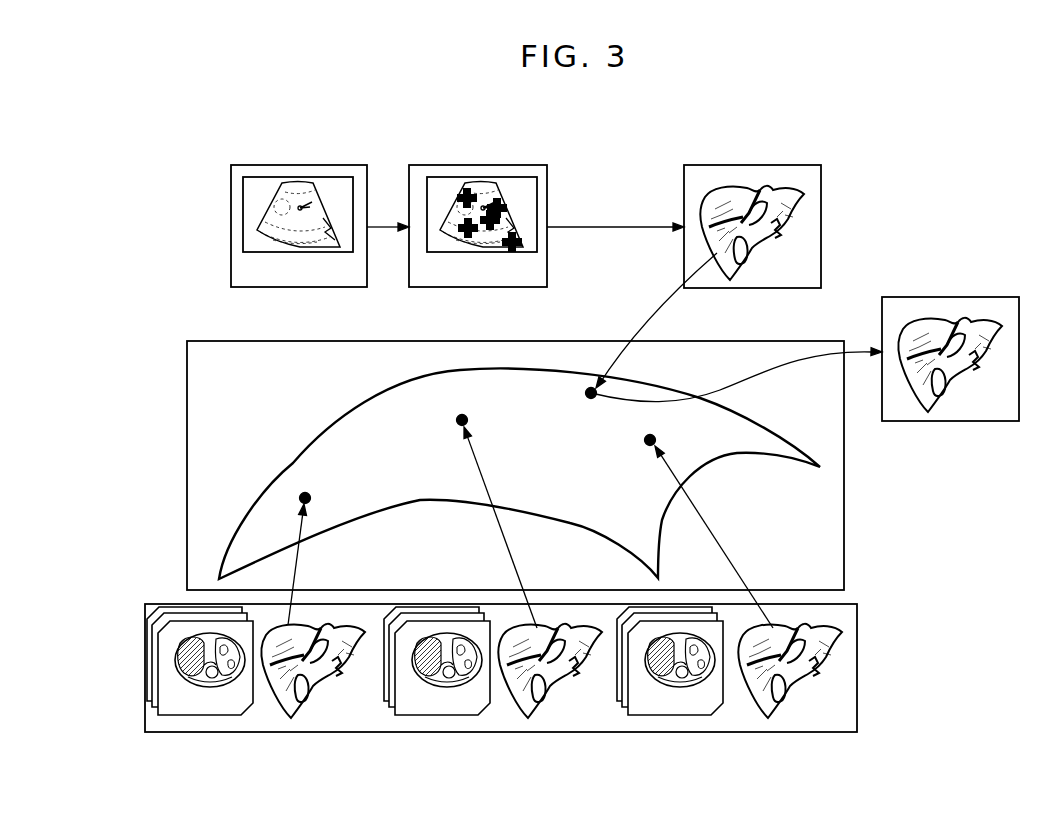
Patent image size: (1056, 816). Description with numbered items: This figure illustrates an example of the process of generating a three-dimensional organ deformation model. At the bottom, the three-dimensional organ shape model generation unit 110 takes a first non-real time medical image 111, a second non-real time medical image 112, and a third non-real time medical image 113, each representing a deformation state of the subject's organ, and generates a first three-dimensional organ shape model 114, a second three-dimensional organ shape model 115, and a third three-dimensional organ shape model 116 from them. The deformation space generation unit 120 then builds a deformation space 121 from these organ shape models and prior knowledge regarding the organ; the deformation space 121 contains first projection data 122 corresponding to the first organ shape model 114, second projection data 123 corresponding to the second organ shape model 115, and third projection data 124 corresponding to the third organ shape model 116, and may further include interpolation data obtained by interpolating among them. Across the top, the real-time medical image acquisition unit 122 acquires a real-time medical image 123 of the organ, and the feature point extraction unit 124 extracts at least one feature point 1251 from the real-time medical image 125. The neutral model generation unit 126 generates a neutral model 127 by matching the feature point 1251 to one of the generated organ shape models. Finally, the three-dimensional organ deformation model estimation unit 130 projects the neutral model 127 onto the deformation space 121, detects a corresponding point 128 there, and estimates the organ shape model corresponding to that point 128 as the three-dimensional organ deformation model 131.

The 3D organ shape model generation unit 110 is at (857, 620).
The first non-real time medical image 111 is at (210, 717).
The second non-real time medical image 112 is at (422, 717).
The third non-real time medical image 113 is at (672, 717).
The first 3D organ shape model 114 is at (308, 678).
The second 3D organ shape model 115 is at (545, 678).
The third 3D organ shape model 116 is at (785, 678).
The deformation space generation unit 120 is at (203, 340).
The deformation space 121 is at (762, 430).
The first projection data / real-time medical image acquisition unit 122 is at (342, 165).
The second projection data / real-time medical image 123 is at (288, 253).
The third projection data / feature point extraction unit 124 is at (518, 165).
The real-time medical image 125 is at (463, 253).
The feature point 1251 is at (465, 190).
The neutral model generation unit 126 is at (760, 165).
The neutral model 127 is at (787, 233).
The point corresponding to the neutral model 128 is at (589, 398).
The 3D organ deformation model estimation unit 130 is at (958, 297).
The 3D organ deformation model 131 is at (987, 363).